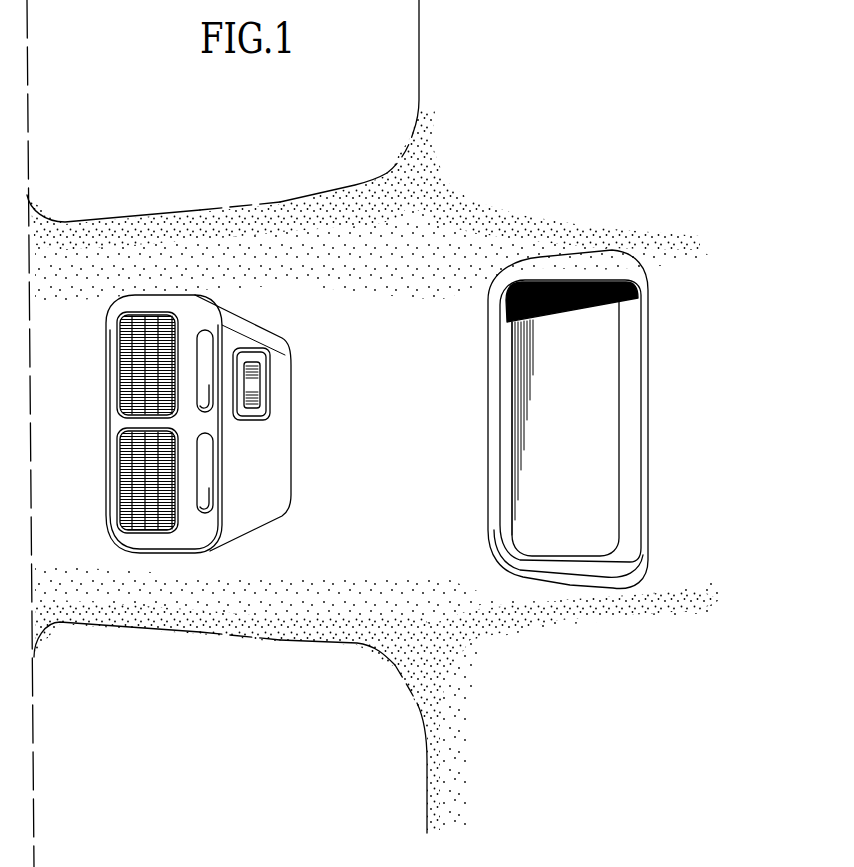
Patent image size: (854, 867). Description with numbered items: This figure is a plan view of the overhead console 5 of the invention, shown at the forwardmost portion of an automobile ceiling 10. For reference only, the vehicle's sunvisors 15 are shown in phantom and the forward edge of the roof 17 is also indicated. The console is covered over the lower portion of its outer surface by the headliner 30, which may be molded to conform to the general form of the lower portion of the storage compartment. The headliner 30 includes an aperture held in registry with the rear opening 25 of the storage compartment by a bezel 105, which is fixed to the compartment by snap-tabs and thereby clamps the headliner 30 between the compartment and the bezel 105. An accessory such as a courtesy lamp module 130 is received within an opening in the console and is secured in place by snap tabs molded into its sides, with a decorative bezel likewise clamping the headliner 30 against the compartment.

The overhead console 5 is at (348, 173).
The automobile ceiling 10 is at (582, 666).
The sunvisors 15 is at (418, 50).
The forward edge of the roof 17 is at (34, 722).
The rear opening 25 is at (603, 432).
The headliner 30 is at (410, 424).
The bezel 105 is at (622, 267).
The courtesy lamp module 130 is at (256, 508).